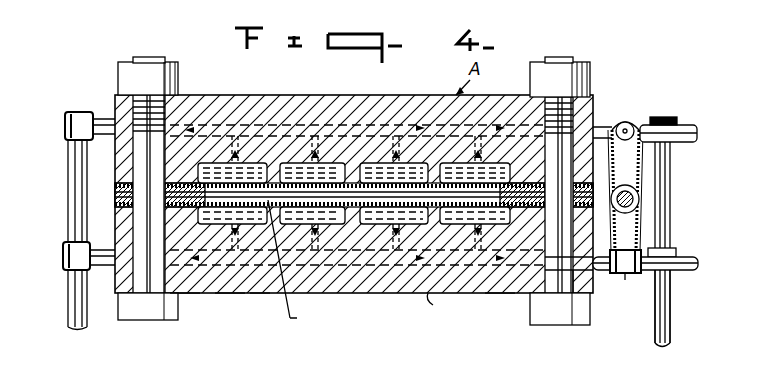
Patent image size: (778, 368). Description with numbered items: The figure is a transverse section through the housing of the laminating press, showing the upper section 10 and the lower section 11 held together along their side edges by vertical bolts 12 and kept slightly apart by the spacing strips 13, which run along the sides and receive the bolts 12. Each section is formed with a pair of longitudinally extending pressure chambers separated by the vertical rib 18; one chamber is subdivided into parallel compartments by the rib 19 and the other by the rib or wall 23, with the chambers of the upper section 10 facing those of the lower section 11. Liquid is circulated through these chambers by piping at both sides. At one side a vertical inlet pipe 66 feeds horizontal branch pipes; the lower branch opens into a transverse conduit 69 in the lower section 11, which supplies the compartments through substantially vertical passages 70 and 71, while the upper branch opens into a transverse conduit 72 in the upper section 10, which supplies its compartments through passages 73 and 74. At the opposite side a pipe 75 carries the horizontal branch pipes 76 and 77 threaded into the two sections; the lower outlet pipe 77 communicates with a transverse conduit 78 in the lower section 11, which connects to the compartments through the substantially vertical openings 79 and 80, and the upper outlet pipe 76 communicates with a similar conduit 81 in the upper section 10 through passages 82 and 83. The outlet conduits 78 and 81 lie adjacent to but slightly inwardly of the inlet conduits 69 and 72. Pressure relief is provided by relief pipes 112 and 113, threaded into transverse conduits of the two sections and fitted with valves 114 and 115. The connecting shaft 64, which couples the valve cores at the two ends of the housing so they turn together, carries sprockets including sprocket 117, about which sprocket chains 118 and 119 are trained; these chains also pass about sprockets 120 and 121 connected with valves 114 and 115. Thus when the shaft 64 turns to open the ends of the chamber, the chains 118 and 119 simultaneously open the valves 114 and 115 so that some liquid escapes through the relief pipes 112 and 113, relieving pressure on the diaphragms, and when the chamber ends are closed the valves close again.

The upper section 10 is at (337, 108).
The lower section 11 is at (257, 293).
The securing bolts 12 is at (135, 155).
The spacing strips 13 is at (116, 193).
The vertical longitudinally extending rib 18 is at (354, 209).
The rib 19 is at (290, 270).
The rib or wall 23 is at (432, 300).
The connecting shaft 64 is at (640, 203).
The inlet pipe 66 is at (672, 300).
The conduit 69 is at (434, 222).
The vertical passage 70 is at (223, 296).
The vertical passage 71 is at (492, 296).
The conduit 72 is at (425, 135).
The passage 73 is at (255, 125).
The passage 74 is at (500, 135).
The inlet pipe 75 is at (70, 214).
The upper outlet pipe 76 is at (101, 116).
The lower outlet pipe 77 is at (107, 262).
The conduit 78 is at (184, 296).
The vertical opening 79 is at (388, 293).
The vertical opening 80 is at (296, 290).
The conduit 81 is at (213, 127).
The passage 82 is at (380, 143).
The passage 83 is at (294, 147).
The relief pipe 112 is at (612, 123).
The relief pipe 113 is at (584, 272).
The valve 114 is at (652, 118).
The valve 115 is at (623, 274).
The sprocket 117 is at (618, 187).
The sprocket chain 118 is at (640, 233).
The sprocket chain 119 is at (644, 168).
The sprocket 120 is at (640, 115).
The sprocket 121 is at (633, 278).